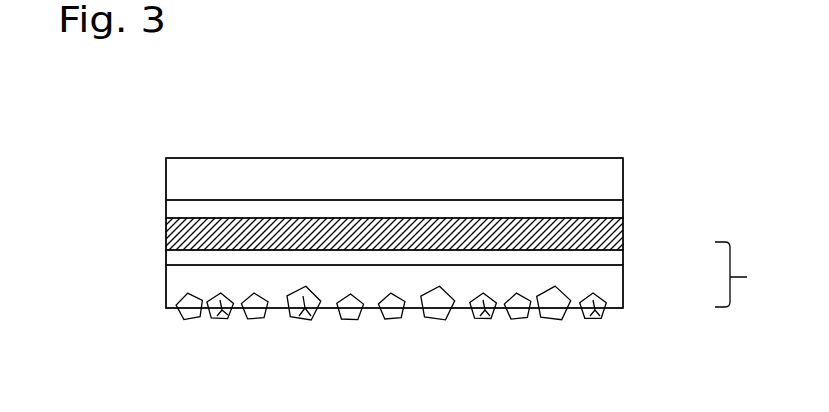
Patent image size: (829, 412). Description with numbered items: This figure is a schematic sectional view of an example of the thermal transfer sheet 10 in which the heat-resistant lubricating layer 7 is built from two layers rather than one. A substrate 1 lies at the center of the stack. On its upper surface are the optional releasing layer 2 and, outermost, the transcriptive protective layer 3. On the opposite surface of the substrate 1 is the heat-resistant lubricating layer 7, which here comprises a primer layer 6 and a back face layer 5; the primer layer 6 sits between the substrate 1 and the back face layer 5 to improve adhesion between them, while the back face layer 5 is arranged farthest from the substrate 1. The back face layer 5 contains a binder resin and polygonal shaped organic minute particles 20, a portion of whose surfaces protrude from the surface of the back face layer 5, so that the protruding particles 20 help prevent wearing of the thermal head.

The thermal transfer sheet 10 is at (591, 138).
The transcriptive protective layer 3 is at (600, 185).
The releasing layer 2 is at (603, 212).
The substrate 1 is at (603, 237).
The primer layer 6 is at (603, 262).
The back face layer 5 is at (613, 295).
The heat-resistant lubricating layer 7 is at (738, 274).
The polygonal shaped organic minute particle 20 is at (222, 320).